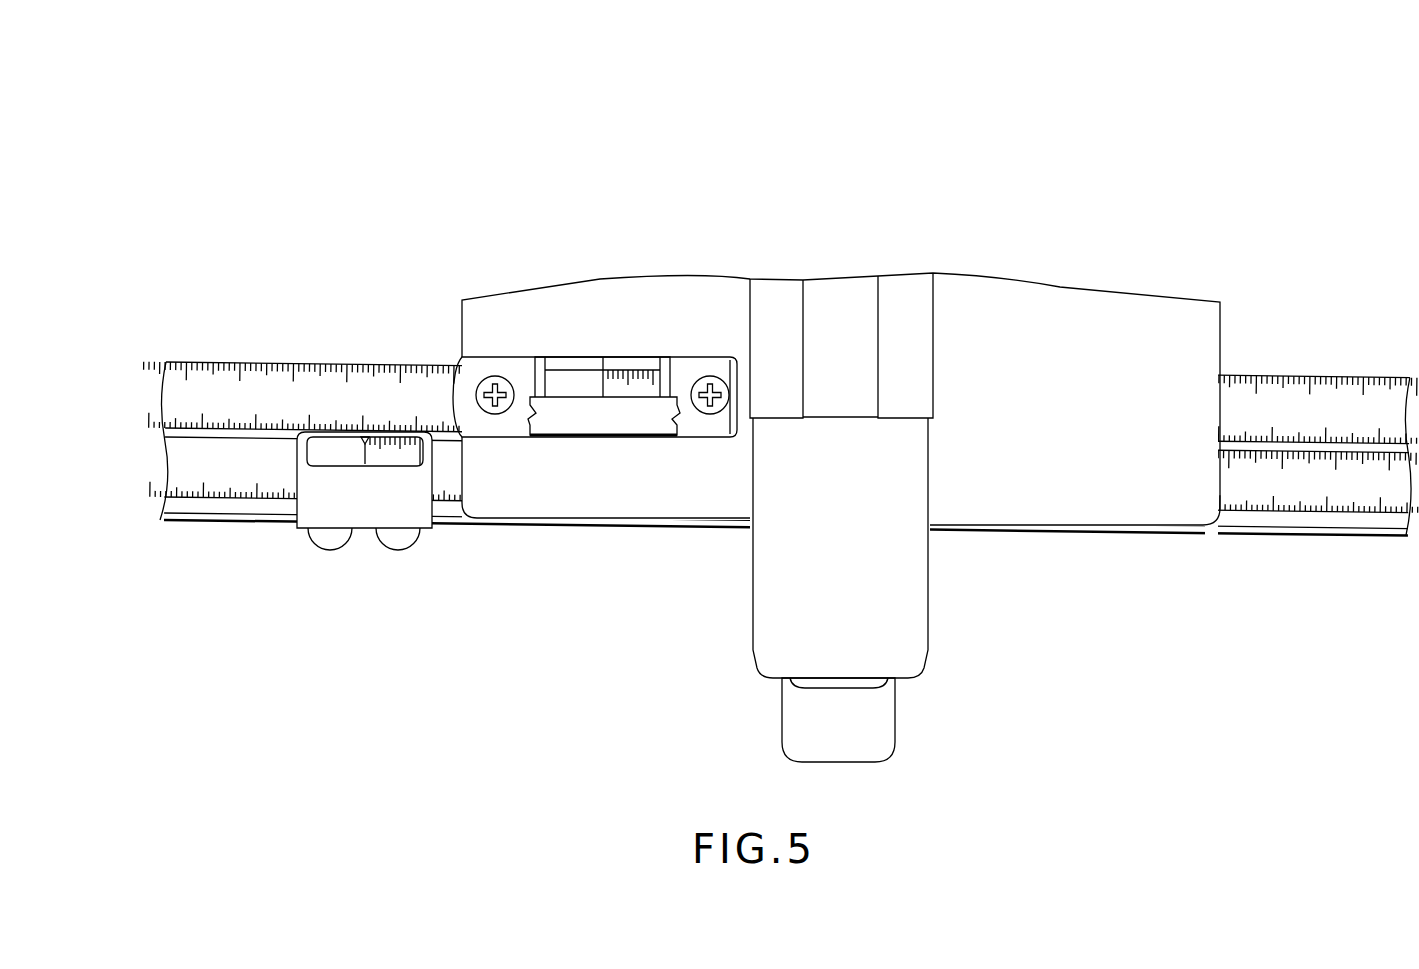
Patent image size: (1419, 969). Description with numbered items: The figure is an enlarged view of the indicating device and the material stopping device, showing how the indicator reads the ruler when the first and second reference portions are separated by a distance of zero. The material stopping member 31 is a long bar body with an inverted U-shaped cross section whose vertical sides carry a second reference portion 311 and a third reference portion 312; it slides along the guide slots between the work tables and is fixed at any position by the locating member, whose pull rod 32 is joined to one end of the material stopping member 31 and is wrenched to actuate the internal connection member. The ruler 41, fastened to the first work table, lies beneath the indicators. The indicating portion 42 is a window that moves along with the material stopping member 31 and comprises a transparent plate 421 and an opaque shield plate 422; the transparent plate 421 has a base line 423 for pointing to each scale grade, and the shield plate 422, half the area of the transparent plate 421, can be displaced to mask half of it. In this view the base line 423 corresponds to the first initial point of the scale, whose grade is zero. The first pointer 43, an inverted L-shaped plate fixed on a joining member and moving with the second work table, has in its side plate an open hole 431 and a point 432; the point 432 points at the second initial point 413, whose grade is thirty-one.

The ruler 41 is at (230, 470).
The indicating portion 42 is at (539, 232).
The transparent plate 421 is at (578, 244).
The shield plate 422 is at (553, 410).
The base line 423 is at (612, 360).
The first pointer 43 is at (292, 433).
The open hole 431 is at (322, 458).
The point 432 is at (308, 310).
The second initial point 413 is at (365, 440).
The material stopping member 31 is at (841, 494).
The second reference portion 311 is at (745, 352).
The third reference portion 312 is at (935, 372).
The pull rod 32 is at (835, 742).